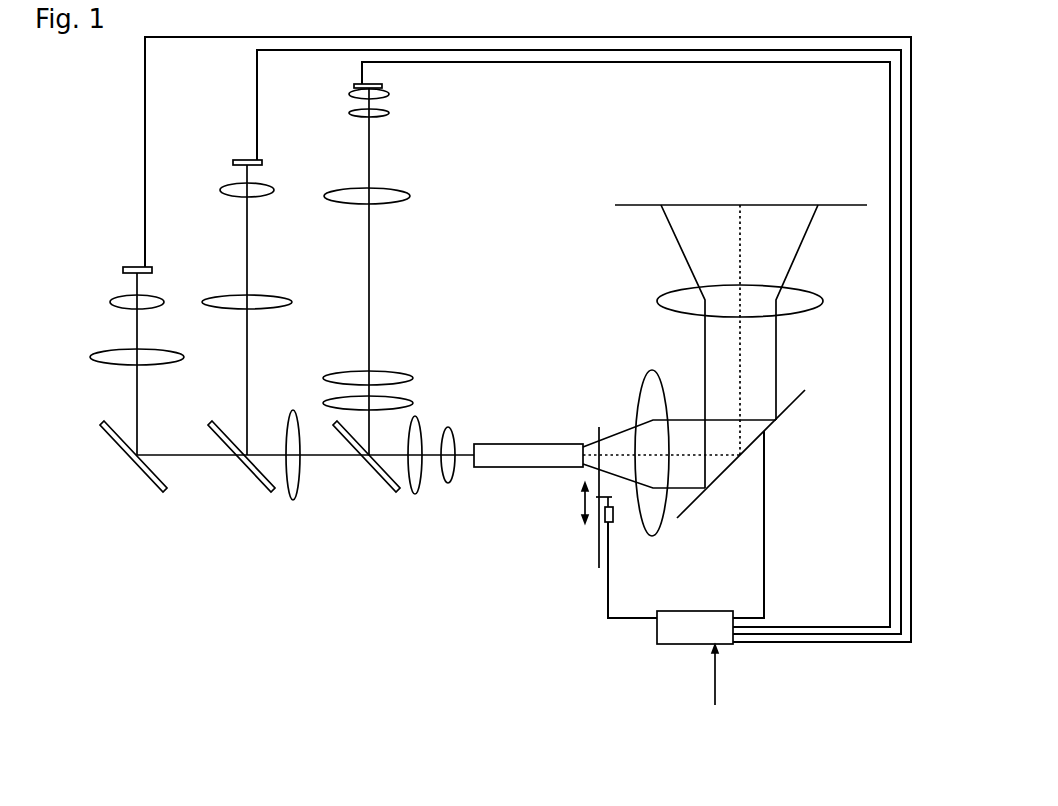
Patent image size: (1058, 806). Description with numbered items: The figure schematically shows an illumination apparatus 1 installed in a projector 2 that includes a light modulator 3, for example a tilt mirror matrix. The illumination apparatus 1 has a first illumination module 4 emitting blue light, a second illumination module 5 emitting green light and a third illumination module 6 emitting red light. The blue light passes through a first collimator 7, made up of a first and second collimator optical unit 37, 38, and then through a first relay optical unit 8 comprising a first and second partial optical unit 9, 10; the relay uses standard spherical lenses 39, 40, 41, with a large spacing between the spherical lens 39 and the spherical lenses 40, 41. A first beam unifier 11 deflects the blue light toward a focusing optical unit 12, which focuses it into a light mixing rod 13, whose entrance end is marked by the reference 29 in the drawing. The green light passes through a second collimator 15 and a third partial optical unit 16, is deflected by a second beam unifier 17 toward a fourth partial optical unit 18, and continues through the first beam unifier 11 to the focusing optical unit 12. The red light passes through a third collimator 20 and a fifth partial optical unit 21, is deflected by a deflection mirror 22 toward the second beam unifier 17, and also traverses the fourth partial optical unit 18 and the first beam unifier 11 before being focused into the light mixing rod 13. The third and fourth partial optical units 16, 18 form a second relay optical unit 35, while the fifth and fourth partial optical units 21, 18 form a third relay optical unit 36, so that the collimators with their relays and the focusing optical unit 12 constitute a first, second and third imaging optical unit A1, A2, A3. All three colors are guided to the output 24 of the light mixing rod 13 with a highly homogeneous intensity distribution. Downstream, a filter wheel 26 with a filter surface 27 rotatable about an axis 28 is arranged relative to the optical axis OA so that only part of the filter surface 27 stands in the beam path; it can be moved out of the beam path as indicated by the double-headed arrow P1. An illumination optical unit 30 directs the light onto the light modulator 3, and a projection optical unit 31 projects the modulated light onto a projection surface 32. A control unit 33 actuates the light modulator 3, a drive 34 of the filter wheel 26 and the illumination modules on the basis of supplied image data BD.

The illumination apparatus 1 is at (126, 226).
The projector 2 is at (765, 454).
The light modulator 3 is at (798, 410).
The first illumination module 4 is at (385, 84).
The second illumination module 5 is at (240, 160).
The third illumination module 6 is at (132, 267).
The first collimator 7 is at (353, 86).
The first relay optical unit 8 is at (418, 202).
The first partial optical unit 9 is at (402, 180).
The second partial optical unit 10 is at (372, 365).
The first beam unifier 11 is at (375, 482).
The focusing optical unit 12 is at (415, 498).
The light mixing rod 13 is at (526, 464).
The second collimator 15 is at (222, 185).
The third partial optical unit 16 is at (264, 268).
The second beam unifier 17 is at (260, 485).
The fourth partial optical unit 18 is at (292, 502).
The third collimator 20 is at (145, 301).
The fifth partial optical unit 21 is at (120, 365).
The deflection mirror 22 is at (150, 487).
The output 24 is at (559, 509).
The filter wheel 26 is at (597, 555).
The filter surface 27 is at (559, 530).
The axis 28 is at (613, 500).
The exit face 29 is at (470, 442).
The illumination optical unit 30 is at (655, 537).
The projection optical unit 31 is at (818, 308).
The projection surface 32 is at (625, 210).
The control unit 33 is at (680, 648).
The drive 34 is at (617, 522).
The second relay optical unit 35 is at (284, 268).
The third relay optical unit 36 is at (146, 370).
The first collimator optical unit 37 is at (350, 91).
The second collimator optical unit 38 is at (348, 113).
The spherical lens 39 is at (402, 180).
The spherical lens 40 is at (345, 372).
The spherical lens 41 is at (325, 398).
The first imaging optical unit A1 is at (413, 180).
The second imaging optical unit A2 is at (300, 295).
The third imaging optical unit A3 is at (165, 313).
The optical axis OA is at (620, 450).
The double-headed arrow P1 is at (580, 500).
The image data BD is at (715, 672).